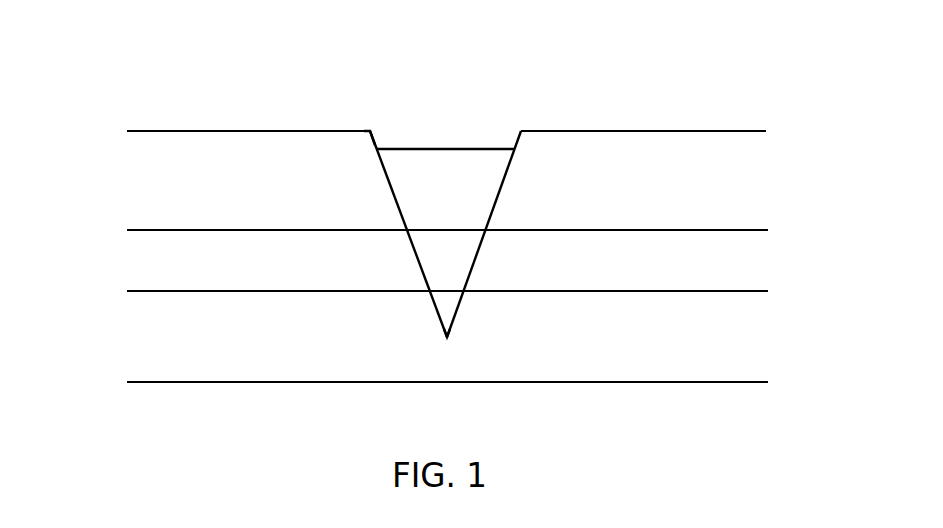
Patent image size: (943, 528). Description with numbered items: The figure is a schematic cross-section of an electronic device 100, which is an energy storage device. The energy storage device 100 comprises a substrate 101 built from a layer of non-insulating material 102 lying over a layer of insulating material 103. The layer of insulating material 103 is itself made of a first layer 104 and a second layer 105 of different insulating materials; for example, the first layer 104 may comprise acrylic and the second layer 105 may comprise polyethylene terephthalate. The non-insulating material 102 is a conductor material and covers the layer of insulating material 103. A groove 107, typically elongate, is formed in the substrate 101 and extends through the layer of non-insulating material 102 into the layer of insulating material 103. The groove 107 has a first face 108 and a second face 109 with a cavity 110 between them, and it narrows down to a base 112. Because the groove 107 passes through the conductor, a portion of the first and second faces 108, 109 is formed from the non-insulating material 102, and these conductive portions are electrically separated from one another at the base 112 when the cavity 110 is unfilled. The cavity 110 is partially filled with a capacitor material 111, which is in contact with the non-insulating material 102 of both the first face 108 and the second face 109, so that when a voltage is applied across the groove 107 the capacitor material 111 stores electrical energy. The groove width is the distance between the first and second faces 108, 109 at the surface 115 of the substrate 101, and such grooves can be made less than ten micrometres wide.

The electronic device 100 is at (606, 78).
The substrate 101 is at (788, 132).
The layer of non-insulating material 102 is at (258, 197).
The layer of insulating material 103 is at (87, 230).
The first layer 104 is at (257, 279).
The second layer 105 is at (257, 352).
The groove 107 is at (376, 144).
The first face 108 is at (414, 257).
The second face 109 is at (473, 262).
The cavity 110 is at (447, 126).
The capacitor material 111 is at (483, 149).
The base 112 is at (447, 337).
The surface 115 is at (698, 130).